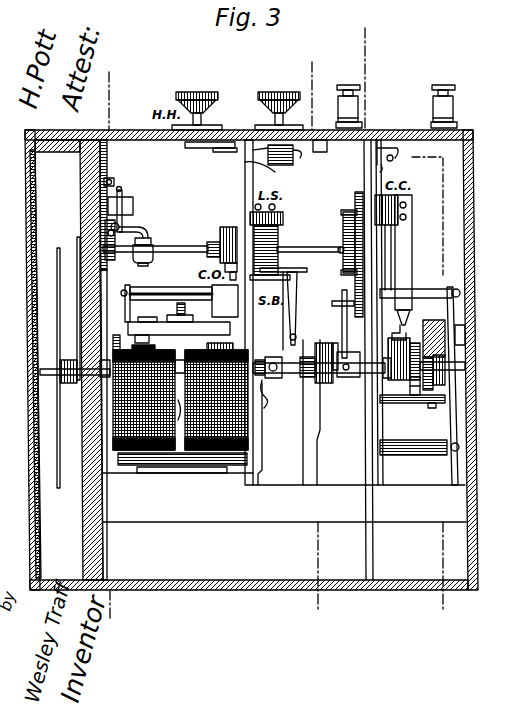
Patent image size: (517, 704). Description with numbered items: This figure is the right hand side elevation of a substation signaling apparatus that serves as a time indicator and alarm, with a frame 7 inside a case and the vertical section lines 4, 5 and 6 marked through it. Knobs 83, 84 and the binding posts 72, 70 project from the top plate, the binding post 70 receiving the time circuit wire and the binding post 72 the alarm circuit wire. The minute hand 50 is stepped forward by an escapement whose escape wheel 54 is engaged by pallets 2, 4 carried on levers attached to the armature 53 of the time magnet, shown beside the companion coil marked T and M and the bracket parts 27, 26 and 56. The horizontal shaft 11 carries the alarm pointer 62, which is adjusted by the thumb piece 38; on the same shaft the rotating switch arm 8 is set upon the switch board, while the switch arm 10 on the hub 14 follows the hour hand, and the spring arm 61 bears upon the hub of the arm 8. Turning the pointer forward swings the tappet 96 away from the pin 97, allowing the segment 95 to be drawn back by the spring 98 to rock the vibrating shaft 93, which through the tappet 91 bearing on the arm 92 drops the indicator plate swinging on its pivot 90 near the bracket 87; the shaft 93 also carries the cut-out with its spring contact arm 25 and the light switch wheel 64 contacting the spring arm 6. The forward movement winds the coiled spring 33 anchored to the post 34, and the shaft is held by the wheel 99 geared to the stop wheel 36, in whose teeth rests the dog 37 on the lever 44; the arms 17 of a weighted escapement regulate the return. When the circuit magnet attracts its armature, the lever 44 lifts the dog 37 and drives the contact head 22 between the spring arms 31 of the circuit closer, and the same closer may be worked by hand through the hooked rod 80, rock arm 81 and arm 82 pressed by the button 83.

The pallet 4 is at (108, 348).
The segmental metal contact plate 5 is at (353, 322).
The spring arm 6 is at (305, 340).
The adjusting knob 84 is at (203, 89).
The button 83 is at (282, 89).
The binding post 72 is at (359, 100).
The binding post 70 is at (455, 100).
The spring member 27 is at (220, 149).
The contact head 26 is at (232, 152).
The arm 82 is at (296, 155).
The rock arm 81 is at (398, 148).
The hooked rod 80 is at (386, 166).
The alarm pointer 62 is at (57, 305).
The minute hand 50 is at (77, 318).
The thumb piece 38 is at (53, 368).
The screw bracket 87 is at (110, 177).
The tappet 91 is at (122, 193).
The arm 92 is at (133, 205).
The pivot 90 is at (122, 229).
The vibrating shaft 93 is at (192, 246).
The spring contact arm 25 is at (215, 242).
The spring arm 7 is at (247, 212).
The pallet 2 is at (170, 312).
The escape wheel 54 is at (138, 320).
The armature 53 is at (179, 328).
The post 56 is at (128, 336).
The transmitting coil T is at (144, 397).
The magnet coil M is at (211, 396).
The wheel 64 is at (281, 236).
The rotating switch arm 8 is at (289, 300).
The segment 95 is at (355, 198).
The spring 98 is at (343, 265).
The pin 97 is at (334, 303).
The tappet 96 is at (342, 318).
The hub 14 is at (270, 357).
The switch arm 10 is at (354, 364).
The shaft 11 is at (336, 350).
The spring arm 61 is at (315, 412).
The spring arm 31 is at (417, 252).
The contact head 22 is at (410, 312).
The dog 37 is at (410, 347).
The stop wheel 36 is at (388, 350).
The trip arm or lever 44 is at (386, 366).
The coiled spring 33 is at (446, 363).
The post 34 is at (465, 330).
The arm 17 is at (419, 425).
The wheel 99 is at (432, 408).